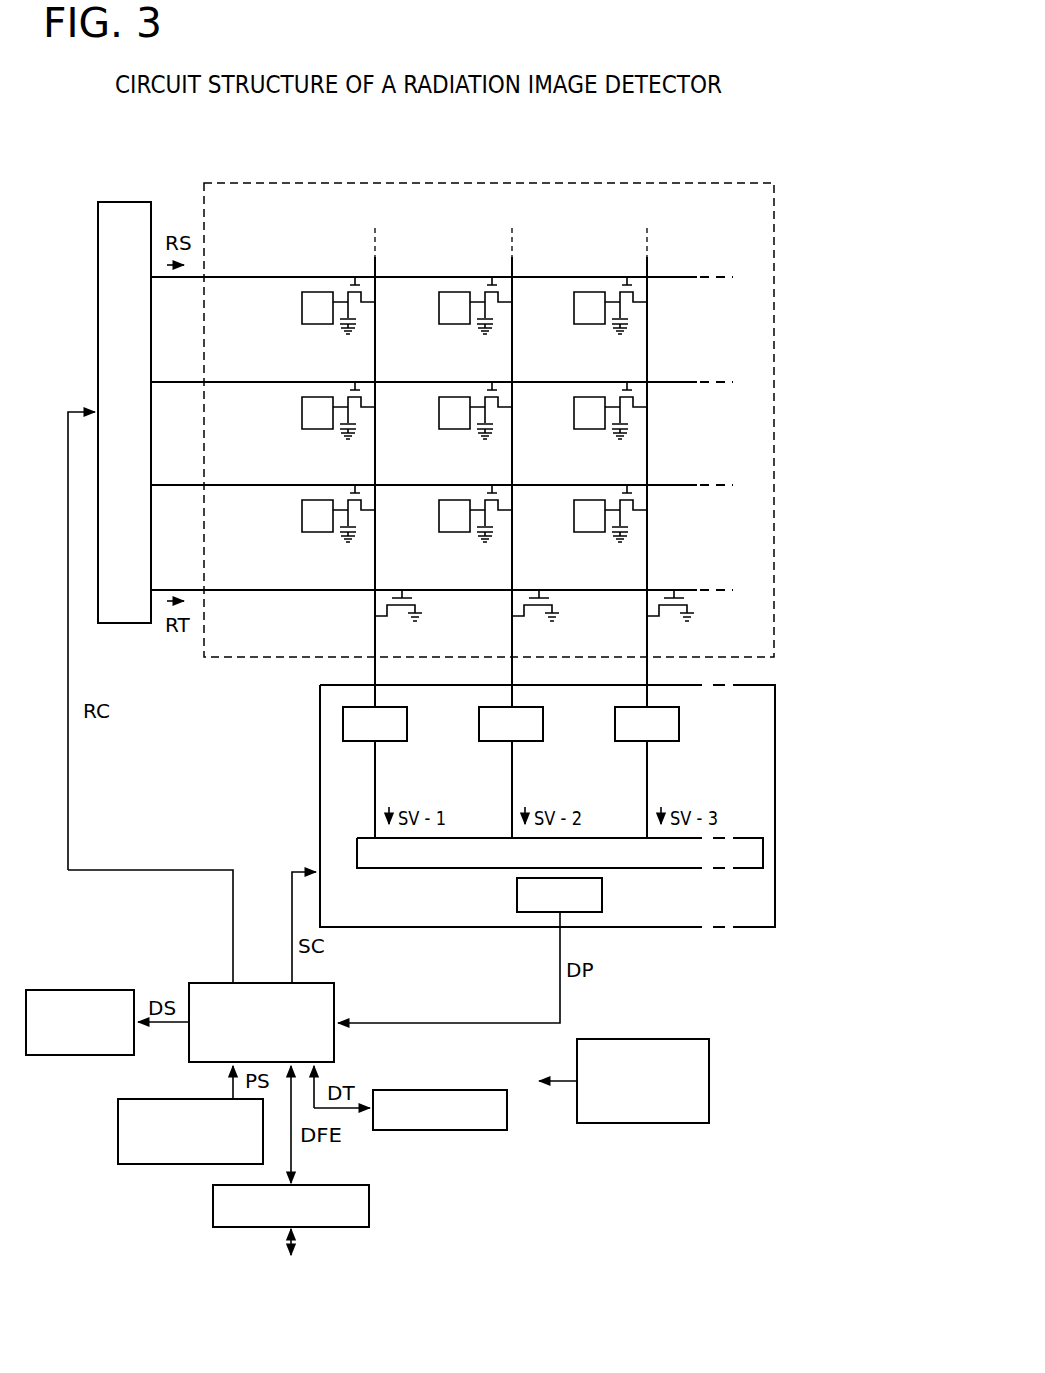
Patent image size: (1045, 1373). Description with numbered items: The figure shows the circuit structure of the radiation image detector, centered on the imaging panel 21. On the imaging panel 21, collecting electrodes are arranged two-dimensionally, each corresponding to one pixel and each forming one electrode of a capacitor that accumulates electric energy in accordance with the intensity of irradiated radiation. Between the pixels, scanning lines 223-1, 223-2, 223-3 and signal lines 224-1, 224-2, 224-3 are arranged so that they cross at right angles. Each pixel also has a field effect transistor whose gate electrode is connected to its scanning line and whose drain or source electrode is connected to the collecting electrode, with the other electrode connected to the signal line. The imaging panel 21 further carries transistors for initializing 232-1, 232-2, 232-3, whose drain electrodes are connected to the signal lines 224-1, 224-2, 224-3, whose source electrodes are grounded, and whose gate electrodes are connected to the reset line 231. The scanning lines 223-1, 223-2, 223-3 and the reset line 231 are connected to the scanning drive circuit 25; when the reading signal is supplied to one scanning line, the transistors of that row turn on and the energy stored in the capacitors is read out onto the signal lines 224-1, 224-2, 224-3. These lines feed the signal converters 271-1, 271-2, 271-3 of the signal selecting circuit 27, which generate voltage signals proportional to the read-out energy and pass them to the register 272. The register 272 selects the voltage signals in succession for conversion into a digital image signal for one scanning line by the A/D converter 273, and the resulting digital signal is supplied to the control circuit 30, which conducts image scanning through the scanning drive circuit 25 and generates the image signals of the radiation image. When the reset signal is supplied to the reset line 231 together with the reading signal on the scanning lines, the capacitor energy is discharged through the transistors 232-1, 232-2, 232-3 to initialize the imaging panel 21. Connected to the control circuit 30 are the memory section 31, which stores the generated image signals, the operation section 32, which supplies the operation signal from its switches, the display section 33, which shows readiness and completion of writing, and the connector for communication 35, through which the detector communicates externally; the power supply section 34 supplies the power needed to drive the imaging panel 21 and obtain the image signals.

The imaging panel 21 is at (432, 181).
The scanning drive circuit 25 is at (98, 281).
The signal selecting circuit 27 is at (318, 780).
The control circuit 30 is at (336, 1000).
The memory section 31 is at (452, 1131).
The operation section 32 is at (170, 1166).
The display section 33 is at (62, 1057).
The power supply section 34 is at (675, 1038).
The connector for communication 35 is at (330, 1228).
The scanning line 223-1 is at (719, 462).
The scanning line 223-2 is at (719, 359).
The scanning line 223-3 is at (719, 256).
The signal line 224-1 is at (377, 258).
The signal line 224-2 is at (513, 258).
The signal line 224-3 is at (648, 258).
The reset line 231 is at (685, 590).
The transistor for initializing 232-1 is at (422, 623).
The transistor for initializing 232-2 is at (555, 623).
The transistor for initializing 232-3 is at (692, 623).
The signal converter 271-1 is at (393, 741).
The signal converter 271-2 is at (529, 741).
The signal converter 271-3 is at (665, 741).
The register 272 is at (425, 869).
The A/D converter 273 is at (604, 896).